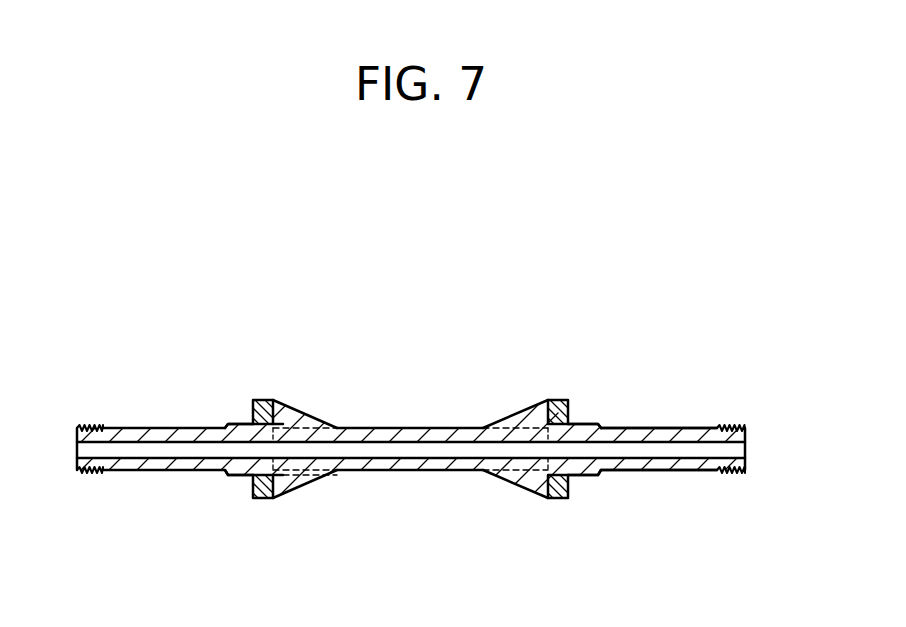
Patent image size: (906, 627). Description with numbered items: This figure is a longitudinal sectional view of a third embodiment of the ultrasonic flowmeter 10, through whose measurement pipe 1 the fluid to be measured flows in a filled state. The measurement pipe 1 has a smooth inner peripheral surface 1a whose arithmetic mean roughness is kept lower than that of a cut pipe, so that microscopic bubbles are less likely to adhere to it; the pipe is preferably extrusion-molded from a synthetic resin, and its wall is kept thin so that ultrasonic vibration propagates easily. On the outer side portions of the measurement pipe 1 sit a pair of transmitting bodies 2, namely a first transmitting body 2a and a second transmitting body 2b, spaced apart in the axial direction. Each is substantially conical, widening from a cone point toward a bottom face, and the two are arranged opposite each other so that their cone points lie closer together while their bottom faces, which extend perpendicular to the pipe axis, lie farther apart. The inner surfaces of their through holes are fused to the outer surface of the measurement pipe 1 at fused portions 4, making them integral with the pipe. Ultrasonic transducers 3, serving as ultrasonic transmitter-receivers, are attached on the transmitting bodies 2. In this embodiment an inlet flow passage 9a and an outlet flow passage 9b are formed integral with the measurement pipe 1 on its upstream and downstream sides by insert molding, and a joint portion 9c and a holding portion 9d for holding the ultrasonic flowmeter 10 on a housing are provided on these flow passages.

The ultrasonic flowmeter 10 is at (576, 267).
The measurement pipe 1 is at (380, 428).
The inner peripheral surface 1a is at (417, 440).
The transmitting bodies 2 is at (425, 449).
The first transmitting body 2a is at (290, 410).
The second transmitting body 2b is at (510, 482).
The ultrasonic transducers 3 is at (257, 400).
The fused portions 4 is at (295, 476).
The inlet flow passage 9a is at (152, 428).
The outlet flow passage 9b is at (648, 428).
The joint portion 9c is at (723, 428).
The holding portion 9d is at (572, 427).